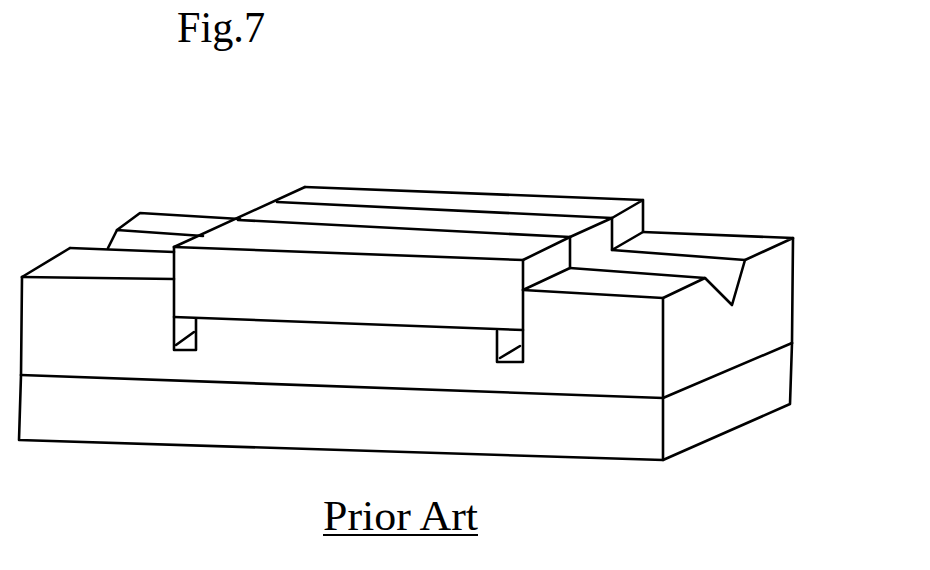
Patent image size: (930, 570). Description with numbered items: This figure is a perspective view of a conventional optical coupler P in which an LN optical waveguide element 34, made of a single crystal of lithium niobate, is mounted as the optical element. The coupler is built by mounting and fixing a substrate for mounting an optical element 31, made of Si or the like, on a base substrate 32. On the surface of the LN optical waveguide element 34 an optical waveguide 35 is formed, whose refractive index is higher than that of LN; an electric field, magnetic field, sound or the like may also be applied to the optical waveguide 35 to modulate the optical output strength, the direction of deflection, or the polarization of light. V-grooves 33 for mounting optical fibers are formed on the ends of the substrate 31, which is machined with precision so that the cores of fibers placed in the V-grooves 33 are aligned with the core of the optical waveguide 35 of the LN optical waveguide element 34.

The substrate for mounting an optical element 31 is at (780, 292).
The base substrate 32 is at (780, 390).
The V-grooves 33 is at (672, 270).
The LN optical waveguide element 34 is at (520, 197).
The optical waveguide 35 is at (350, 213).
The optical coupler P is at (137, 158).